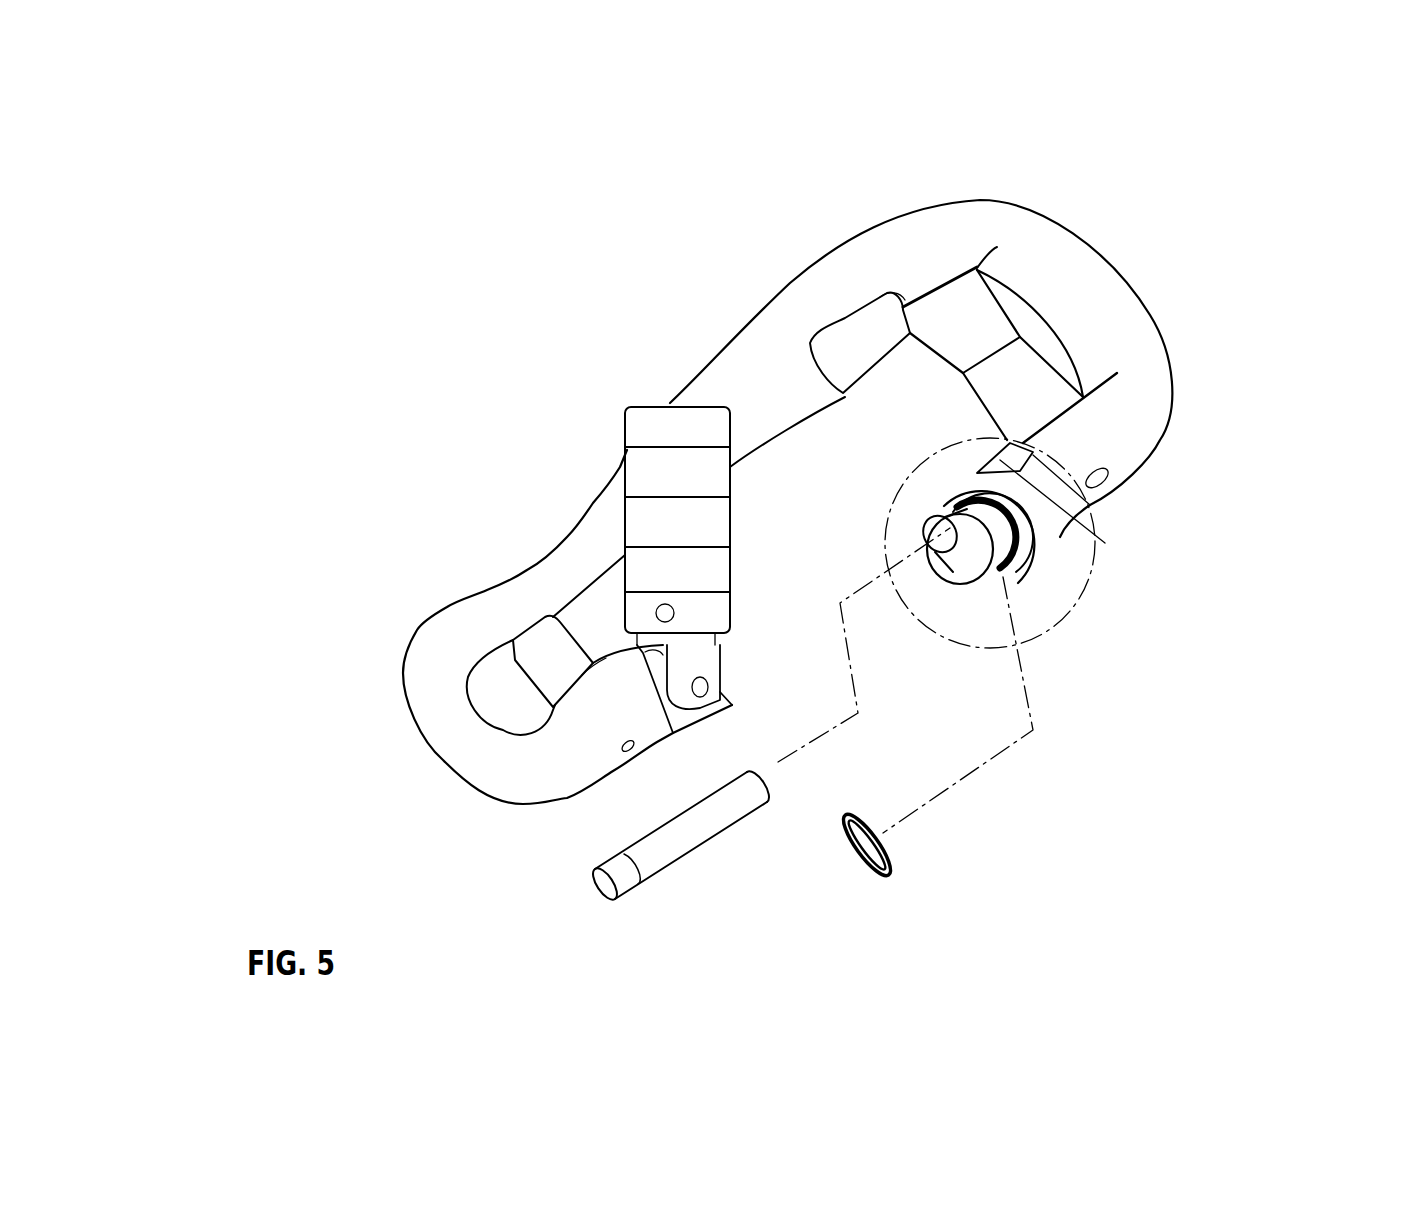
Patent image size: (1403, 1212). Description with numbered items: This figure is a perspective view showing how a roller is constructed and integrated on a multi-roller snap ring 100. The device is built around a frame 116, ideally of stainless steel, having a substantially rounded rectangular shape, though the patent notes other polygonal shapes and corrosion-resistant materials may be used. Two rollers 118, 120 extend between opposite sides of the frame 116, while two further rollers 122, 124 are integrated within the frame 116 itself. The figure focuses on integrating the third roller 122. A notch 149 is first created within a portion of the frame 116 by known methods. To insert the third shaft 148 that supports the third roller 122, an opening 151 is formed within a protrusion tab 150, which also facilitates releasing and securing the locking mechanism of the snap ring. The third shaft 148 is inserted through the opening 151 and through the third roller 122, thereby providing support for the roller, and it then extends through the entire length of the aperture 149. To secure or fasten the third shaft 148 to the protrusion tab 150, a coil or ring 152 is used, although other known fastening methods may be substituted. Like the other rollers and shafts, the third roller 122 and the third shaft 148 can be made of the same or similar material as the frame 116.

The multi-roller snap ring 100 is at (500, 272).
The frame 116 is at (1117, 410).
The roller 118 is at (547, 657).
The roller 120 is at (990, 330).
The third roller 122 is at (1035, 505).
The roller 124 is at (857, 330).
The third shaft 148 is at (687, 830).
The notch 149 is at (1045, 482).
The protrusion tab 150 is at (960, 558).
The opening 151 is at (940, 530).
The ring 152 is at (897, 853).